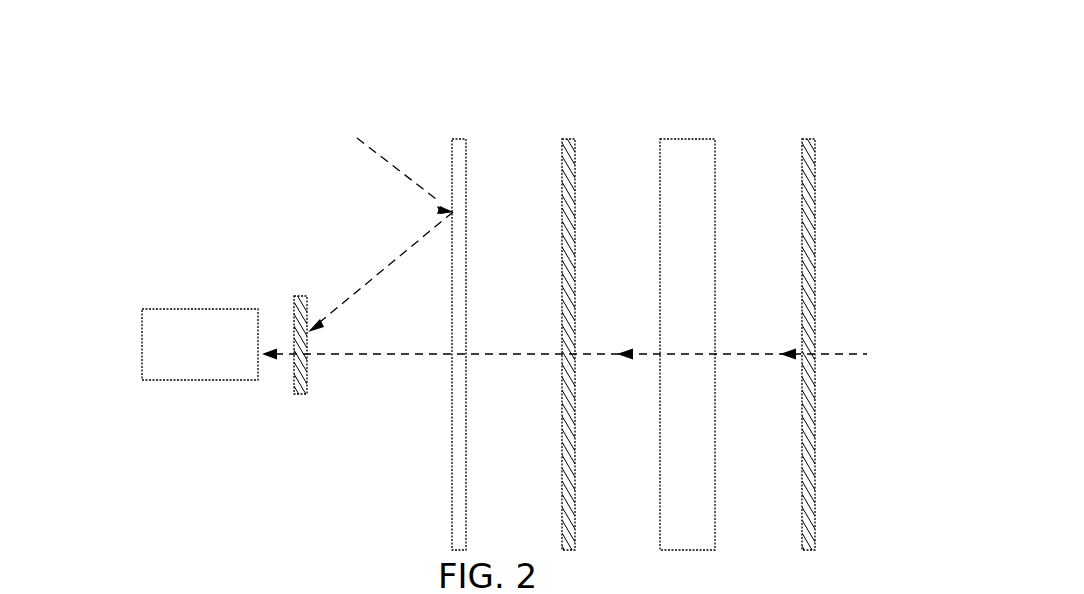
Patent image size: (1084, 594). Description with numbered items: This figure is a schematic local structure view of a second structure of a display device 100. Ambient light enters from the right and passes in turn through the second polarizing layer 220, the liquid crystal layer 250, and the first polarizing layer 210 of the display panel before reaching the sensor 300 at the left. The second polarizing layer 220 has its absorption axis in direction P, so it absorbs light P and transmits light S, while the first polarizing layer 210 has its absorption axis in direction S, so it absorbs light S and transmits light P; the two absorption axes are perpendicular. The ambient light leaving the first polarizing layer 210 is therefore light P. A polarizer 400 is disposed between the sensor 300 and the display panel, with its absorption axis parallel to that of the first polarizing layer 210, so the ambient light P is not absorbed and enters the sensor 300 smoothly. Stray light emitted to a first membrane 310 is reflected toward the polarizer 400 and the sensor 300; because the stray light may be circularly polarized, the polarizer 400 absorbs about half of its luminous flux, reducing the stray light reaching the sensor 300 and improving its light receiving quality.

The display device 100 is at (126, 66).
The first polarizing layer 210 is at (562, 150).
The second polarizing layer 220 is at (815, 148).
The liquid crystal layer 250 is at (685, 139).
The sensor 300 is at (182, 381).
The first membrane 310 is at (450, 157).
The polarizer 400 is at (300, 396).